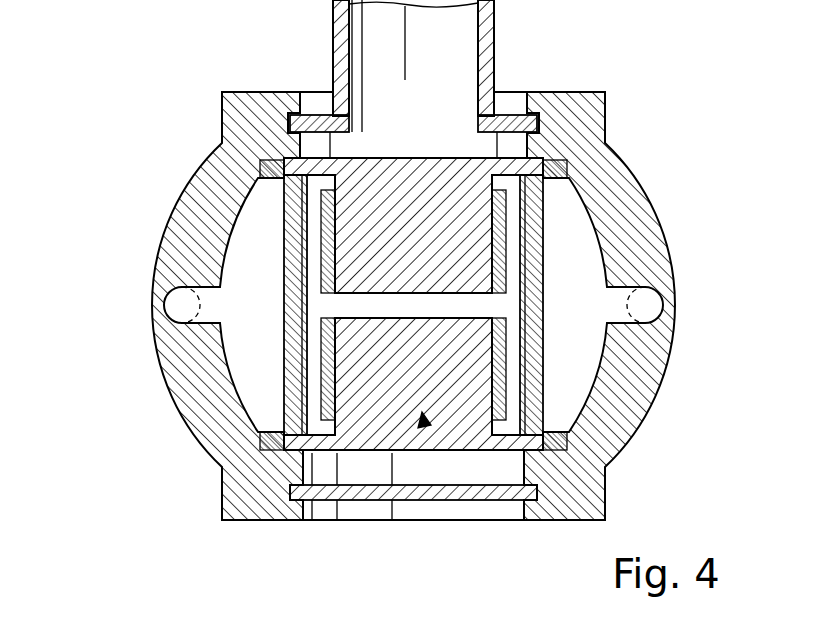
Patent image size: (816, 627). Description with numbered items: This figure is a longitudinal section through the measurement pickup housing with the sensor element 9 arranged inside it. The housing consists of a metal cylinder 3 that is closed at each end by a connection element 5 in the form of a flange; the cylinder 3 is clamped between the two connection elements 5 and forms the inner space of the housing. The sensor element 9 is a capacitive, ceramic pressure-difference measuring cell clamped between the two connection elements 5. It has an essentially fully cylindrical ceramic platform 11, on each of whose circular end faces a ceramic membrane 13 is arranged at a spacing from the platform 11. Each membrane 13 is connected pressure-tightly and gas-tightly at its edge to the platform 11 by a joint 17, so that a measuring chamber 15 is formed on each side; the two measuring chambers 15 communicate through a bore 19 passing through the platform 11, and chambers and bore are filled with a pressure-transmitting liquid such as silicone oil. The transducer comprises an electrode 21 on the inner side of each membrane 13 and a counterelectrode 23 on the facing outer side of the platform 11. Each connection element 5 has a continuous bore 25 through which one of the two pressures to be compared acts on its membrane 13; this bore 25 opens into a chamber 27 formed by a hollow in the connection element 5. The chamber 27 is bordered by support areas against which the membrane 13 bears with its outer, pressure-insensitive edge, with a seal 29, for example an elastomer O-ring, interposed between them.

The metal cylinder 3 is at (487, 490).
The connection element 5 is at (207, 197).
The sensor element 9 is at (427, 424).
The platform 11 is at (390, 266).
The membrane 13 is at (293, 243).
The measuring chamber 15 is at (317, 353).
The joint 17 is at (322, 173).
The bore 19 is at (392, 305).
The electrode 21 is at (305, 388).
The counterelectrode 23 is at (317, 267).
The continuous bore 25 is at (166, 306).
The chamber 27 is at (411, 308).
The seal 29 is at (266, 168).